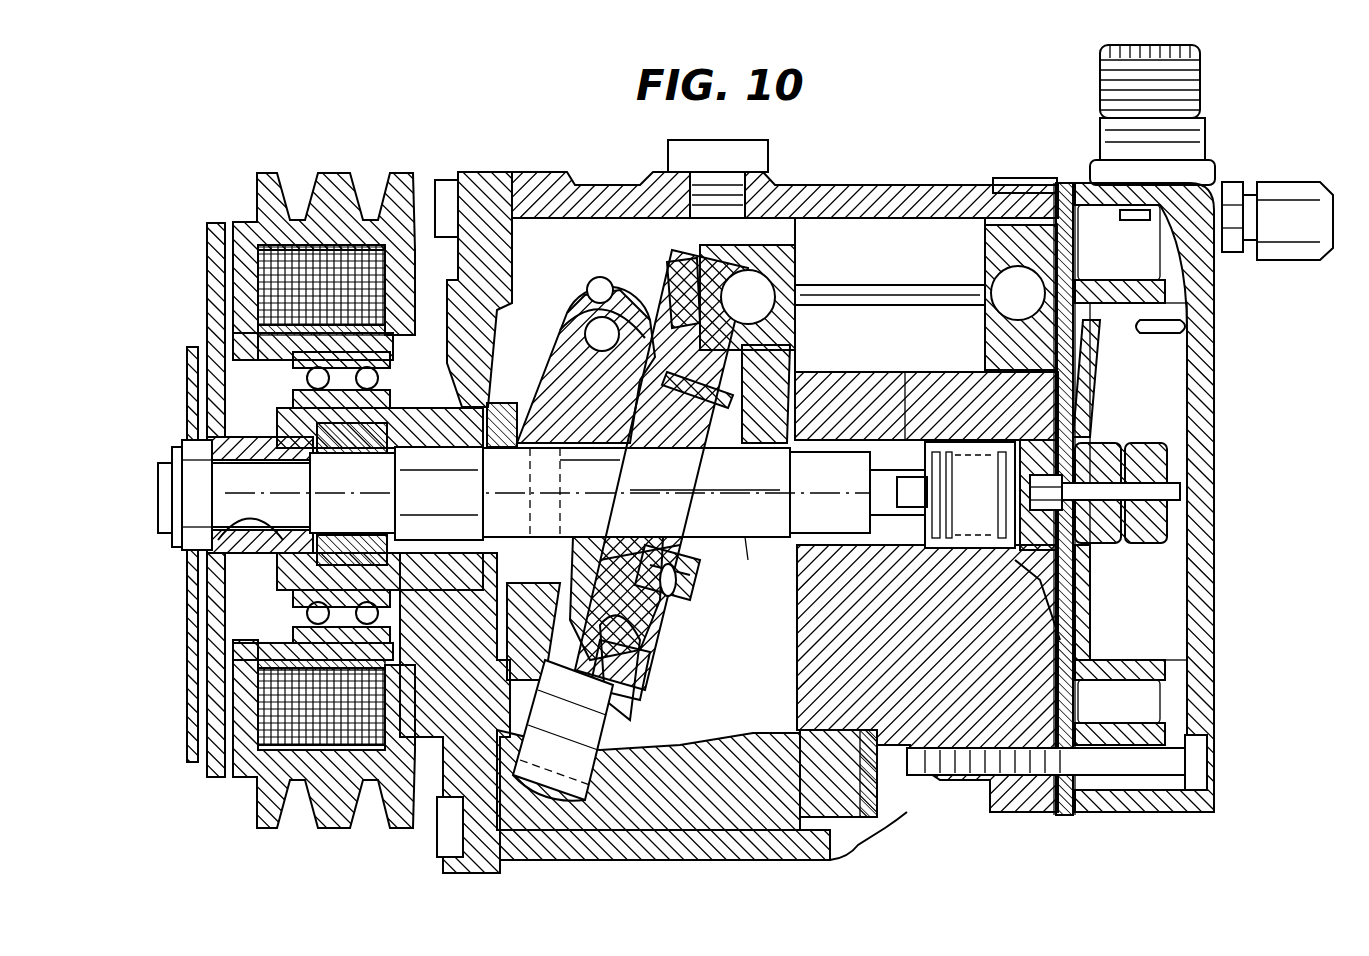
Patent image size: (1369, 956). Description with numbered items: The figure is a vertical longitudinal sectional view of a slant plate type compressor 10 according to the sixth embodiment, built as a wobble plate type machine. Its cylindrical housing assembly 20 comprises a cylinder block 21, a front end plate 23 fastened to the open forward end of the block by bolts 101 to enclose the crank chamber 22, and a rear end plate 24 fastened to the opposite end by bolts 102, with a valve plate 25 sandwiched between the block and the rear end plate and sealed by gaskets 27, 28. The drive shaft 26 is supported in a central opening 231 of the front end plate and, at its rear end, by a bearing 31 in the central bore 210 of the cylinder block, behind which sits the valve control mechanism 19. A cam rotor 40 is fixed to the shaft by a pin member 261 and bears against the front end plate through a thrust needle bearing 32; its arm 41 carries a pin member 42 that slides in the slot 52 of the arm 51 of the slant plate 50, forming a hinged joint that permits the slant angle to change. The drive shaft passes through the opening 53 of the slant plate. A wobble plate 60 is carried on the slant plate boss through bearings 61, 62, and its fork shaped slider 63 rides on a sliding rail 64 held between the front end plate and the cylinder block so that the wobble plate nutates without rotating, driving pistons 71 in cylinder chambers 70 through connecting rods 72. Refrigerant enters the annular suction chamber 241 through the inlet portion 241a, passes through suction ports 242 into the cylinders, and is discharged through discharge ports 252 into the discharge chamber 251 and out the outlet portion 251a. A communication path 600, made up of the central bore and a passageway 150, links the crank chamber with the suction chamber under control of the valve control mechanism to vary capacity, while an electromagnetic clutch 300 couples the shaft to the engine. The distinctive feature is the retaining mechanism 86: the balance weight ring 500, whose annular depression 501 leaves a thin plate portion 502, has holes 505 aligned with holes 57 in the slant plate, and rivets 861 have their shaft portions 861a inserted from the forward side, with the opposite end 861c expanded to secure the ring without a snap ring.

The slant plate type compressor 10 is at (803, 190).
The valve control mechanism 19 is at (972, 540).
The cylindrical housing assembly 20 is at (885, 205).
The cylinder block 21 is at (833, 800).
The crank chamber 22 is at (548, 230).
The front end plate 23 is at (478, 205).
The rear end plate 24 is at (1205, 575).
The valve plate 25 is at (1065, 815).
The drive shaft 26 is at (745, 545).
The gasket 27 is at (1050, 815).
The gasket 28 is at (1078, 815).
The bearing 31 is at (830, 530).
The thrust needle bearing 32 is at (500, 420).
The cam rotor 40 is at (560, 368).
The arm 41 is at (588, 327).
The pin member 42 is at (585, 318).
The slant plate 50 is at (680, 290).
The arm 51 is at (612, 280).
The slot 52 is at (594, 278).
The opening 53 is at (645, 450).
The holes 57 is at (630, 462).
The wobble plate 60 is at (740, 262).
The bearing 61 is at (563, 730).
The bearing 62 is at (750, 345).
The fork shaped slider 63 is at (580, 765).
The sliding rail 64 is at (750, 840).
The cylinder chambers 70 is at (945, 228).
The pistons 71 is at (1010, 240).
The connecting rod 72 is at (893, 298).
The retaining mechanism 86 is at (700, 590).
The bolts 101 is at (447, 205).
The bolts 102 is at (1207, 765).
The passageway 150 is at (1040, 625).
The central bore 210 is at (910, 440).
The opening 231 is at (448, 432).
The suction chamber 241 is at (1153, 262).
The inlet portion 241a is at (1148, 210).
The suction ports 242 is at (1080, 252).
The discharge chamber 251 is at (1185, 630).
The outlet portion 251a is at (1175, 325).
The discharge ports 252 is at (1090, 352).
The pin member 261 is at (575, 500).
The electromagnetic clutch 300 is at (278, 808).
The balance weight ring 500 is at (660, 680).
The annular depression 501 is at (660, 640).
The thin plate portion 502 is at (690, 550).
The holes 505 is at (665, 618).
The communication path 600 is at (910, 548).
The rivets 861 is at (690, 600).
The shaft portions 861a is at (550, 530).
The opposite end 861c is at (676, 580).